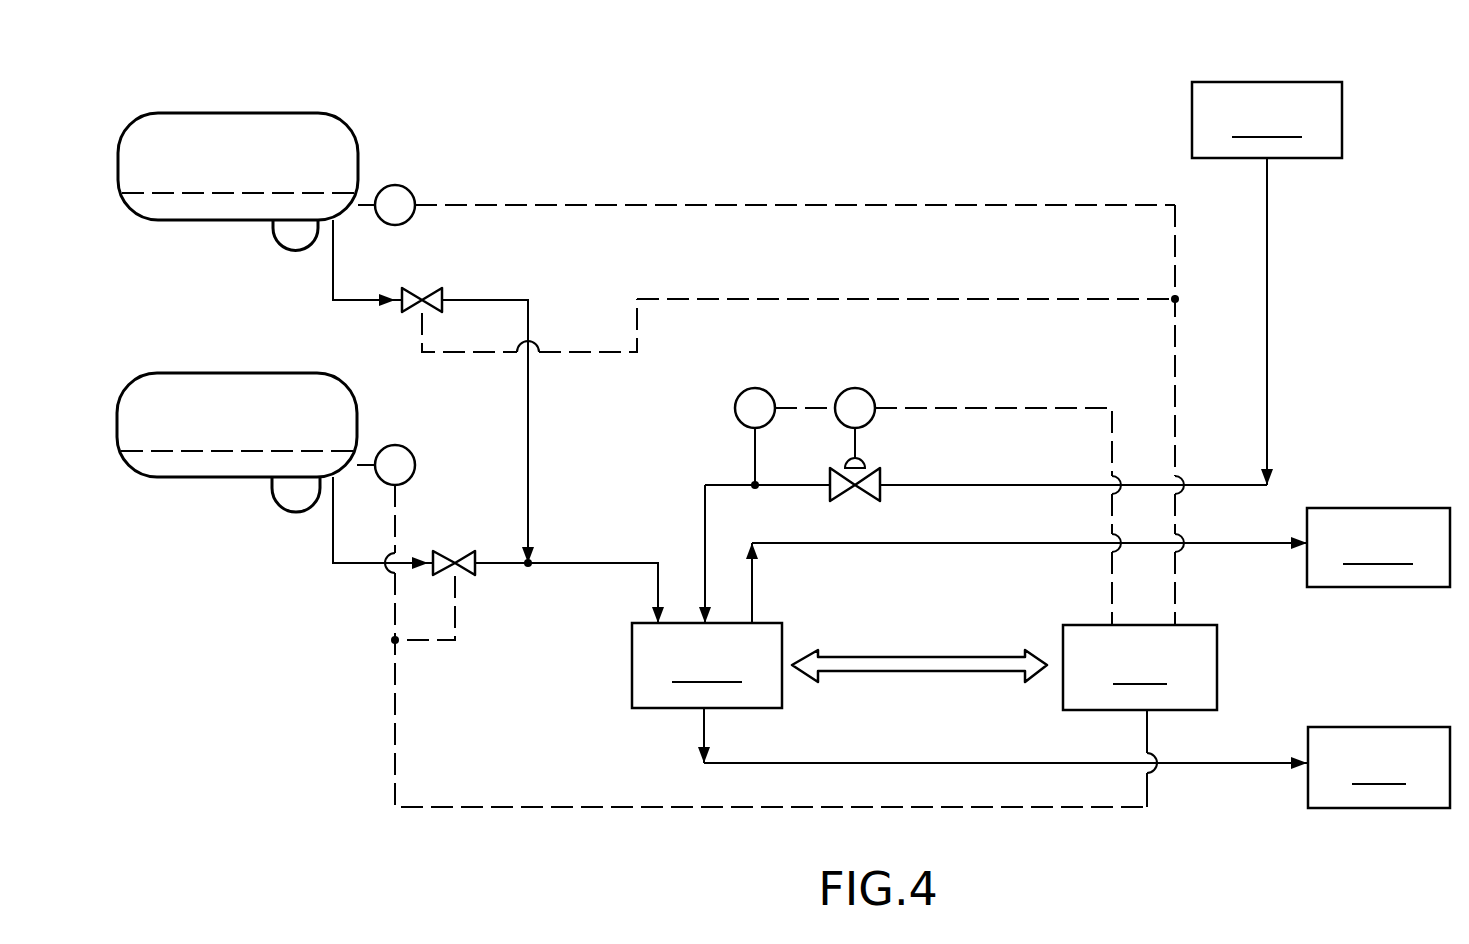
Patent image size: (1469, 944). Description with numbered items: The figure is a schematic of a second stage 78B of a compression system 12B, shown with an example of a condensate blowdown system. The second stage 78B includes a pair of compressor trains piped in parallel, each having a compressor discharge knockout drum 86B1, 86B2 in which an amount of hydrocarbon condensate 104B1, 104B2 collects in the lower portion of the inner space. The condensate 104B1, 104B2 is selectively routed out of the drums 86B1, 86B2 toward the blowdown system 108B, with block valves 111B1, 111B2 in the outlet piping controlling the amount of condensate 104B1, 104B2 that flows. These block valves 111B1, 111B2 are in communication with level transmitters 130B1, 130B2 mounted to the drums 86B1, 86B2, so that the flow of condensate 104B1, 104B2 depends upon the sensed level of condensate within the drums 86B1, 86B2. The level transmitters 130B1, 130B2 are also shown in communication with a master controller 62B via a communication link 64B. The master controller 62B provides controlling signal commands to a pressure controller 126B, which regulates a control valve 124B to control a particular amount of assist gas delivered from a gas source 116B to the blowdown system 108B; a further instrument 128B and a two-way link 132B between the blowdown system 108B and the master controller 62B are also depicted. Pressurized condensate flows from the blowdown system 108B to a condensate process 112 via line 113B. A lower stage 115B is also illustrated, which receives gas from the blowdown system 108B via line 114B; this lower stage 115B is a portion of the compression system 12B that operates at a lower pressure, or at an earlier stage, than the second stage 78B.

The compression system 12B is at (897, 90).
The compressor discharge knockout drum 86B1 is at (258, 130).
The compressor discharge knockout drum 86B2 is at (228, 390).
The hydrocarbon condensate 104B1 is at (178, 200).
The hydrocarbon condensate 104B2 is at (198, 460).
The level transmitter 130B1 is at (410, 187).
The level transmitter 130B2 is at (405, 443).
The block valve 111B1 is at (423, 290).
The block valve 111B2 is at (461, 556).
The communication link 64B is at (690, 200).
The second stage 78B is at (997, 170).
The pressure sensor 128B is at (750, 388).
The pressure controller 126B is at (858, 388).
The control valve 124B is at (880, 467).
The gas source 116B is at (1267, 283).
The lower stage 115B is at (1378, 547).
The line 114B is at (983, 545).
The blowdown system 108B is at (707, 665).
The master controller 62B is at (1140, 716).
The communication link 132B is at (893, 654).
The condensate process 112 is at (1379, 767).
The line 113B is at (928, 762).